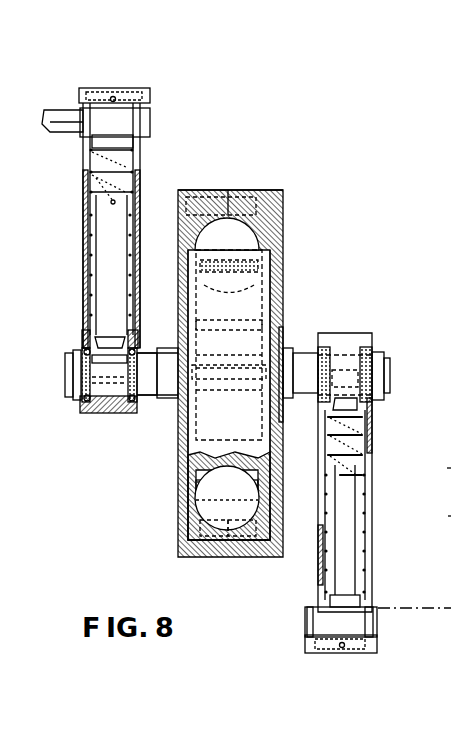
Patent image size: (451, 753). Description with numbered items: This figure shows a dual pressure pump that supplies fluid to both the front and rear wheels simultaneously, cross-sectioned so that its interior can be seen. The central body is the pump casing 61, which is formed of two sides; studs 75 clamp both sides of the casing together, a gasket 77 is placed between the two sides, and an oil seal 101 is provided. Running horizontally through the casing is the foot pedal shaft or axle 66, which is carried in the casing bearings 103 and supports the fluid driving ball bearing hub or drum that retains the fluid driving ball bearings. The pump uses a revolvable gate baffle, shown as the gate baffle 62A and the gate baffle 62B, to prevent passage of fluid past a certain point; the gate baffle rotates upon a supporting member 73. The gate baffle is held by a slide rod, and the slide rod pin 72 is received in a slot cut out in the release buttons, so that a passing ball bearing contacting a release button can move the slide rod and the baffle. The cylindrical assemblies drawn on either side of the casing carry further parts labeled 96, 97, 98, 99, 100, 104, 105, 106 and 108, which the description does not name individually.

The pump casing 61 is at (280, 197).
The gate baffle 62A is at (446, 250).
The gate baffle 62B is at (253, 318).
The foot pedal shaft or axle 66 is at (303, 353).
The slide rod pin 72 is at (433, 473).
The supporting member 73 is at (450, 343).
The studs 75 is at (175, 545).
The gasket 77 is at (370, 567).
The member 96 is at (439, 520).
The bearing 97 is at (113, 372).
The bracket 98 is at (57, 112).
The end cap 99 is at (150, 93).
The sleeve 100 is at (318, 582).
The oil seal 101 is at (175, 412).
The bearings 103 is at (173, 387).
The bearing 104 is at (372, 397).
The ring 105 is at (145, 165).
The cylinder tube 106 is at (93, 283).
The pin 108 is at (113, 97).